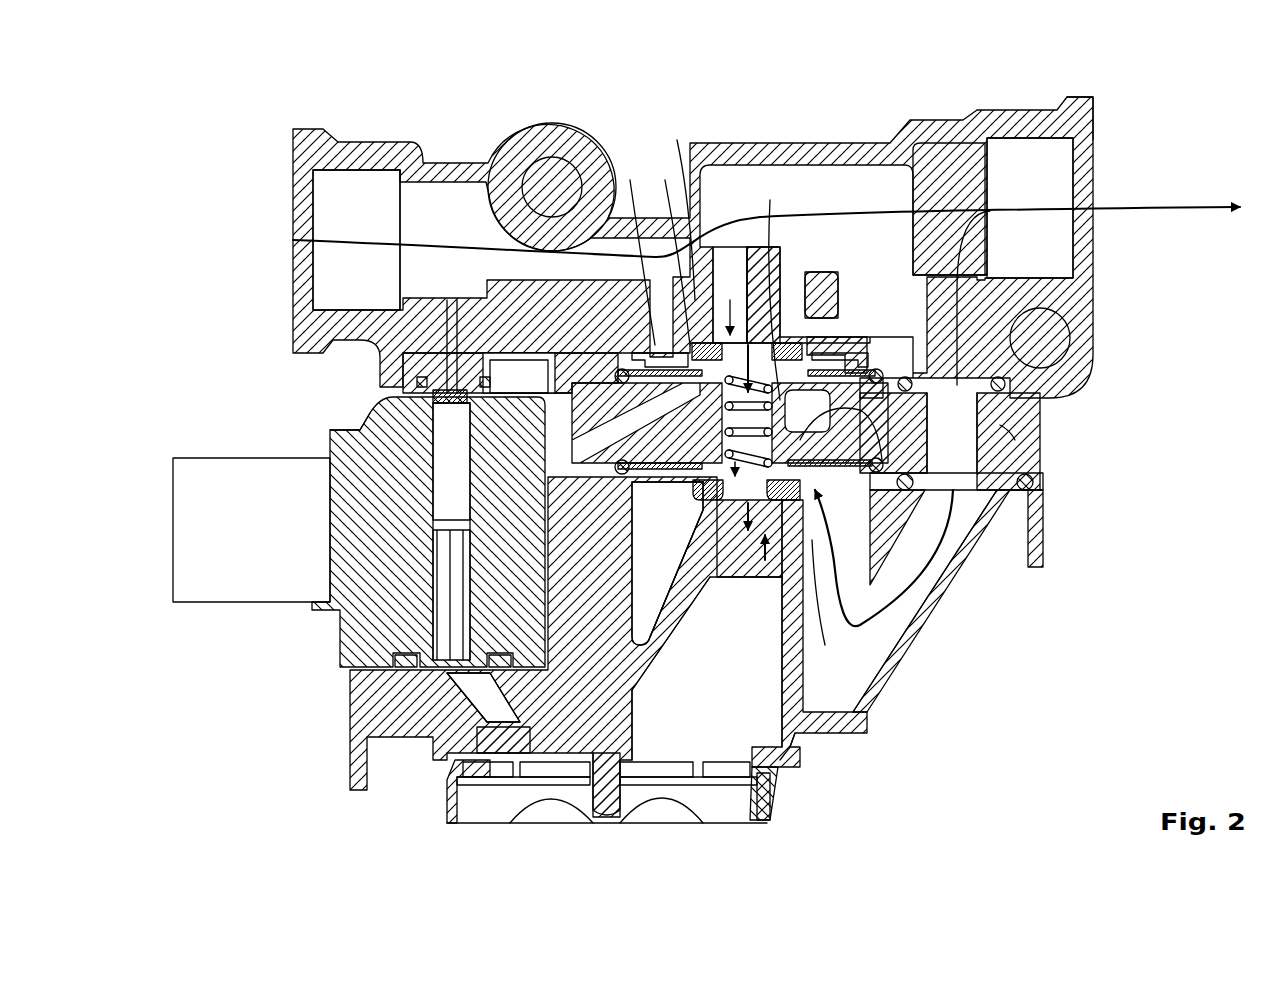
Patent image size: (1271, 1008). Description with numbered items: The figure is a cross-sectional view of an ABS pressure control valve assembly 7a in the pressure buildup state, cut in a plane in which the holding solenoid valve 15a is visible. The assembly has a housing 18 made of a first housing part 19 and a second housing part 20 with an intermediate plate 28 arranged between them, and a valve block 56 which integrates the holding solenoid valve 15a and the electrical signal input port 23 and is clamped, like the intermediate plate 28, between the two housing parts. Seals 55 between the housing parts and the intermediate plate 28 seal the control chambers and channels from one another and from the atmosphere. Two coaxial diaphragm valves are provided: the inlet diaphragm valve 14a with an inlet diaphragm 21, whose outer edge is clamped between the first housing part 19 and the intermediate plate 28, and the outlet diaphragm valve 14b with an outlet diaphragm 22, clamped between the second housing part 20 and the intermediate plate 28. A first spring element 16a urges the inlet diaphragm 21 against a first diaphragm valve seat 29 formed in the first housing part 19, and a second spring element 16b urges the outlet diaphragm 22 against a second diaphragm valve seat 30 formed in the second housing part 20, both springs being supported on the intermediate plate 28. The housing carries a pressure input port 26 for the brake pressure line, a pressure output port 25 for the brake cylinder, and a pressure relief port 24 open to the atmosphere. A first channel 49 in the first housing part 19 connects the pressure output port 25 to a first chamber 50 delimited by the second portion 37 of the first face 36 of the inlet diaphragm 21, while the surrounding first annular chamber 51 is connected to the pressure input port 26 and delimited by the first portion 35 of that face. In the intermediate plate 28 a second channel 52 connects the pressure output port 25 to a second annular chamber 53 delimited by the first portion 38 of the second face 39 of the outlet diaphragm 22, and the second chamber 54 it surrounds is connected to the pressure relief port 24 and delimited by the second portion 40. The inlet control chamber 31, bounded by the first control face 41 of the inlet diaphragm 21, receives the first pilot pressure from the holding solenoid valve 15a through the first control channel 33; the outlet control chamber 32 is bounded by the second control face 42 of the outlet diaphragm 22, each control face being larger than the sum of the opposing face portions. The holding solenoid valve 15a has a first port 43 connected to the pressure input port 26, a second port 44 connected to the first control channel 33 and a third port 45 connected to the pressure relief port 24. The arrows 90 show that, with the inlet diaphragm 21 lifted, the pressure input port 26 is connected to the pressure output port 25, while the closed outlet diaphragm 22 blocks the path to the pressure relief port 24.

The ABS pressure control valve assembly 7a is at (1125, 150).
The inlet diaphragm valve 14a is at (725, 300).
The outlet diaphragm valve 14b is at (822, 670).
The holding solenoid valve 15a is at (325, 437).
The first spring element 16a is at (817, 319).
The second spring element 16b is at (830, 603).
The housing 18 is at (975, 640).
The first housing part 19 is at (1080, 110).
The second housing part 20 is at (1040, 513).
The inlet diaphragm 21 is at (825, 280).
The outlet diaphragm 22 is at (880, 600).
The electrical signal input port 23 is at (195, 538).
The pressure relief port 24 is at (595, 830).
The pressure output port 25 is at (1085, 243).
The pressure input port 26 is at (300, 272).
The intermediate plate 28 is at (1020, 437).
The first diaphragm valve seat 29 is at (672, 251).
The second diaphragm valve seat 30 is at (660, 580).
The inlet control chamber 31 is at (1012, 345).
The outlet control chamber 32 is at (765, 505).
The first control channel 33 is at (612, 480).
The first portion of the first face 35 is at (655, 262).
The first face 36 is at (820, 345).
The second portion of the first face 37 is at (752, 340).
The first portion of the second face 38 is at (1003, 510).
The second face 39 is at (955, 540).
The second portion of the second face 40 is at (740, 510).
The first control face 41 is at (667, 563).
The second control face 42 is at (1005, 430).
The first port 43 is at (447, 390).
The second port 44 is at (460, 390).
The third port 45 is at (445, 700).
The first channel 49 is at (945, 160).
The first chamber 50 is at (680, 208).
The first annular chamber 51 is at (605, 235).
The second channel 52 is at (975, 462).
The second annular chamber 53 is at (965, 540).
The second chamber 54 is at (765, 765).
The seals 55 is at (385, 365).
The valve block 56 is at (370, 630).
The arrows 90 is at (734, 300).